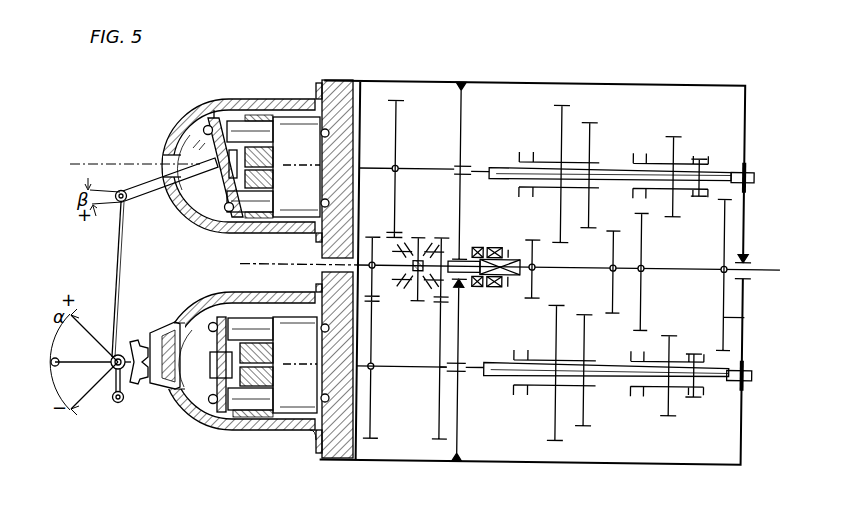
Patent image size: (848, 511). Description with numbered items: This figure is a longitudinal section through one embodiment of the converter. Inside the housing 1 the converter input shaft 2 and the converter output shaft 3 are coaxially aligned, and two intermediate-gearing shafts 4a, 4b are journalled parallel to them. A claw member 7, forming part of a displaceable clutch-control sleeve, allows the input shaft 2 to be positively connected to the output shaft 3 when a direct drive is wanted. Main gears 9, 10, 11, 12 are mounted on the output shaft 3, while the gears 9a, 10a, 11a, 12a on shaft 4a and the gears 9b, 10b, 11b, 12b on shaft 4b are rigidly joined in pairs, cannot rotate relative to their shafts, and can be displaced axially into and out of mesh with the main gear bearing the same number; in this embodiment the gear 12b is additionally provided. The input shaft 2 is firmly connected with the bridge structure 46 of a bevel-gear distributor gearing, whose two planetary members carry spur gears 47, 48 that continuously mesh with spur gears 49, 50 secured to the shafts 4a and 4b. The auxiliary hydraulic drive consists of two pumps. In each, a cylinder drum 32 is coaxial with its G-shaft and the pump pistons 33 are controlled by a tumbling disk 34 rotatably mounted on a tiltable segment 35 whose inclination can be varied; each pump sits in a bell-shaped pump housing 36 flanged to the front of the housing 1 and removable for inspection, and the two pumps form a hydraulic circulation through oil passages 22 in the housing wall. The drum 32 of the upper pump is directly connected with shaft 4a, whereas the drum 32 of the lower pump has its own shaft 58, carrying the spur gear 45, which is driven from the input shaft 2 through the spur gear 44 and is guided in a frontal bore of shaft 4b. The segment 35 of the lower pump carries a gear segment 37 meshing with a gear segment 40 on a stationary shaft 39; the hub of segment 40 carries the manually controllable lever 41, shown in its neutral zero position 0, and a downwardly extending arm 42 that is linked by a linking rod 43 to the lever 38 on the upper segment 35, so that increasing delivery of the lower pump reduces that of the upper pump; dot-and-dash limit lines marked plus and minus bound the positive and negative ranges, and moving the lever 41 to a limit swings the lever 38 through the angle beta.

The neutral zero position 0 is at (127, 162).
The housing 1 is at (508, 83).
The converter input shaft 2 is at (245, 265).
The converter output shaft 3 is at (770, 268).
The intermediate-gearing shaft 4a is at (483, 159).
The intermediate-gearing shaft 4b is at (470, 372).
The claw member 7 is at (493, 293).
The main gear 9 is at (740, 275).
The G-gear 9a is at (698, 156).
The G-gear 9b is at (695, 394).
The main gear 10 is at (643, 284).
The G-gear 10a is at (672, 133).
The G-gear 10b is at (670, 413).
The main gear 11 is at (612, 261).
The G-gear 11a is at (588, 120).
The G-gear 11b is at (585, 424).
The main gear 12 is at (534, 240).
The G-gear 12a is at (560, 103).
The G-gear 12b is at (557, 440).
The oil passages 22 is at (331, 80).
The cylinder drum 32 is at (296, 117).
The pump pistons 33 is at (250, 121).
The tumbling disk 34 is at (212, 118).
The tiltable segment 35 is at (187, 140).
The bell-shaped pump housing 36 is at (188, 114).
The gear segment 37 is at (153, 390).
The lever 38 is at (137, 201).
The stationary shaft 39 is at (117, 354).
The gear segment 40 is at (141, 340).
The manually controllable lever 41 is at (90, 364).
The arm 42 is at (126, 401).
The linking rod 43 is at (114, 268).
The spur gear 44 is at (372, 237).
The spur gear 45 is at (358, 458).
The bridge structure 46 is at (418, 239).
The spur gear 47 is at (443, 237).
The spur gear 48 is at (394, 302).
The spur gear 49 is at (394, 100).
The spur gear 50 is at (442, 460).
The shaft 58 is at (392, 368).